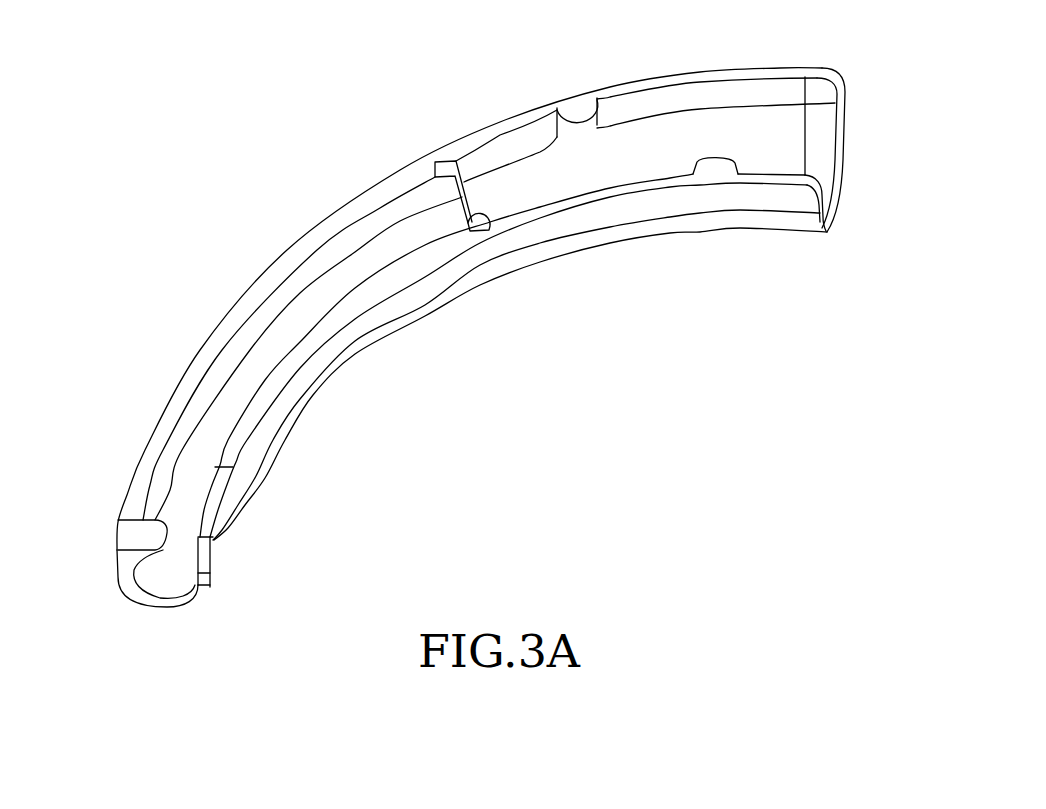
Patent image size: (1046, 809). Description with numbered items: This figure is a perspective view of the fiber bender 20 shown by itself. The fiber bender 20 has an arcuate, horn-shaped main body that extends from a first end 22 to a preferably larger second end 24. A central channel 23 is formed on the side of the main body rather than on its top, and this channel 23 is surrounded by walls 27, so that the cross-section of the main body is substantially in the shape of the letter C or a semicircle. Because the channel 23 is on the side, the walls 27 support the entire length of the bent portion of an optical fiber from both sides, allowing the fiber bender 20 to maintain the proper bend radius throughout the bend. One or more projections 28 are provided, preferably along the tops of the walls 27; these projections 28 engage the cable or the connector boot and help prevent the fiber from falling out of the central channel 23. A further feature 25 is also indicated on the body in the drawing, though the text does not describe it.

The fiber bender 20 is at (322, 225).
The first end 22 is at (217, 514).
The central channel 23 is at (410, 237).
The second end 24 is at (803, 223).
The connecting tab 25 is at (453, 164).
The walls 27 is at (502, 228).
The projections 28 is at (577, 107).